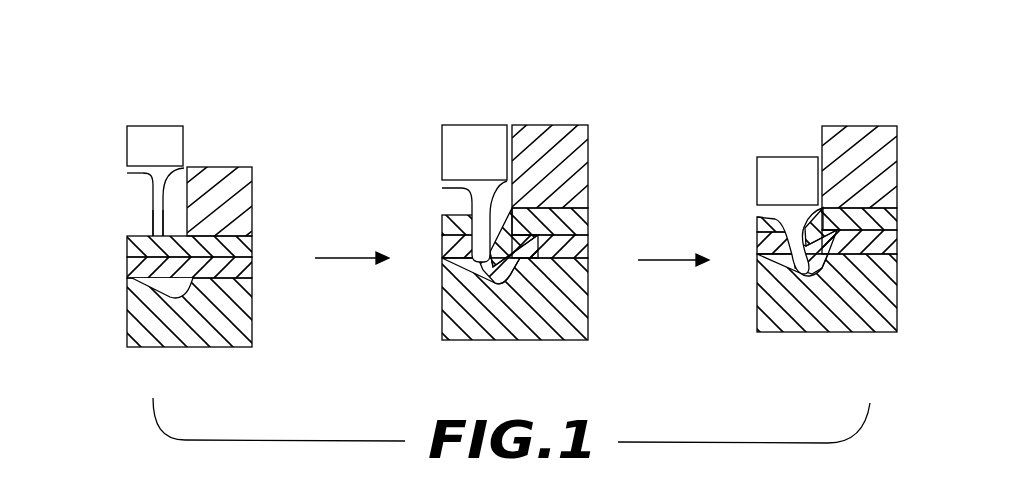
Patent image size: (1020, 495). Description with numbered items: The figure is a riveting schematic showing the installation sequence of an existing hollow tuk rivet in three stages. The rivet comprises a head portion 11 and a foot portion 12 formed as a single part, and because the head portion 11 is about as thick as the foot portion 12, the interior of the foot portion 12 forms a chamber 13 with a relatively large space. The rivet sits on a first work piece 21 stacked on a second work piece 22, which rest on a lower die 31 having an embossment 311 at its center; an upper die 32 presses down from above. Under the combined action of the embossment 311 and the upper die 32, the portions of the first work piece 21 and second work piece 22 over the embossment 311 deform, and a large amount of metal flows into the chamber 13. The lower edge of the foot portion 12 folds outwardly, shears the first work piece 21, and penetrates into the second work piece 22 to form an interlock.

The head portion 11 is at (130, 172).
The foot portion 12 is at (160, 215).
The chamber 13 is at (137, 201).
The first work piece 21 is at (250, 249).
The second work piece 22 is at (250, 268).
The lower die 31 is at (198, 343).
The embossment 311 is at (137, 287).
The upper die 32 is at (153, 145).